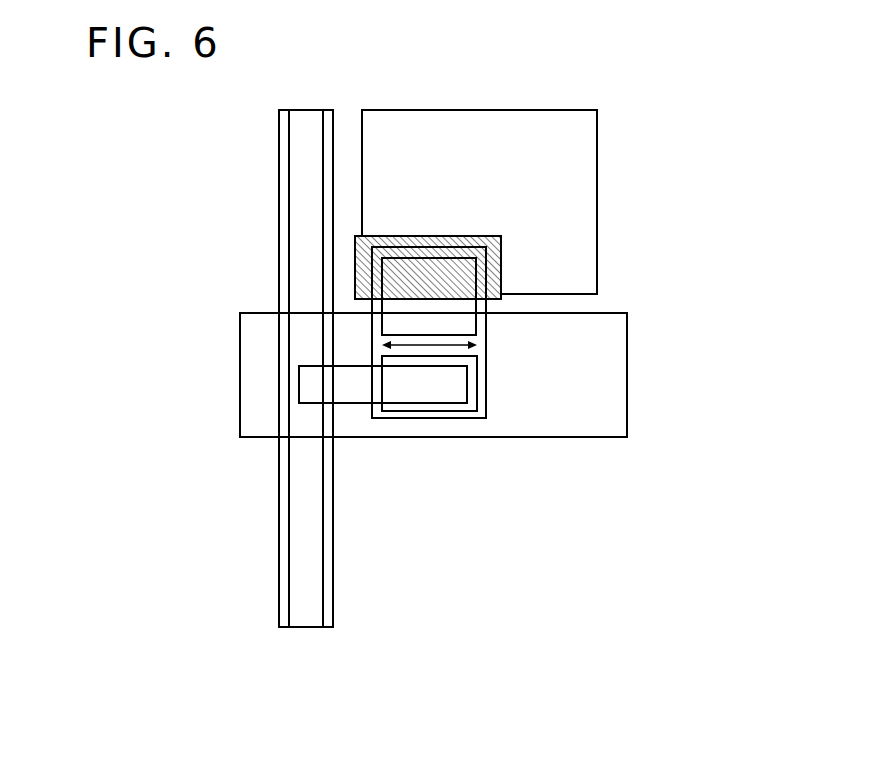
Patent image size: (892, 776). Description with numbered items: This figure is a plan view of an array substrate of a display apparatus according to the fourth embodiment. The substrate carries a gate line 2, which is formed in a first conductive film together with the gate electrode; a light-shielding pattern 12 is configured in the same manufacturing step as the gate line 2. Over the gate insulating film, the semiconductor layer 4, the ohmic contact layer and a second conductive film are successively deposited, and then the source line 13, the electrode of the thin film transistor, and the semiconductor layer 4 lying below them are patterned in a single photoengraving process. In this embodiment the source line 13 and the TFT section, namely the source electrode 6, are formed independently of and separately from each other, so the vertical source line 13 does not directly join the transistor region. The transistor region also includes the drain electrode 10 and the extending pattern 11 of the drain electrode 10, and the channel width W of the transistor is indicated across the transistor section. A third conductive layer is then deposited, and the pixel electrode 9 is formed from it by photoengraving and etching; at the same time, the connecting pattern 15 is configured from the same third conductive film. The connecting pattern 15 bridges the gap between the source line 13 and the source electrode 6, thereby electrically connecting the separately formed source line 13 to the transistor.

The gate line 2 is at (542, 402).
The semiconductor layer 4 is at (411, 346).
The source electrode 6 is at (468, 369).
The pixel electrode 9 is at (575, 195).
The drain electrode 10 is at (488, 327).
The extending pattern of the drain electrode 11 is at (427, 268).
The light-shielding pattern 12 is at (499, 238).
The source line 13 is at (305, 115).
The connecting pattern 15 is at (352, 387).
The channel width W is at (427, 347).